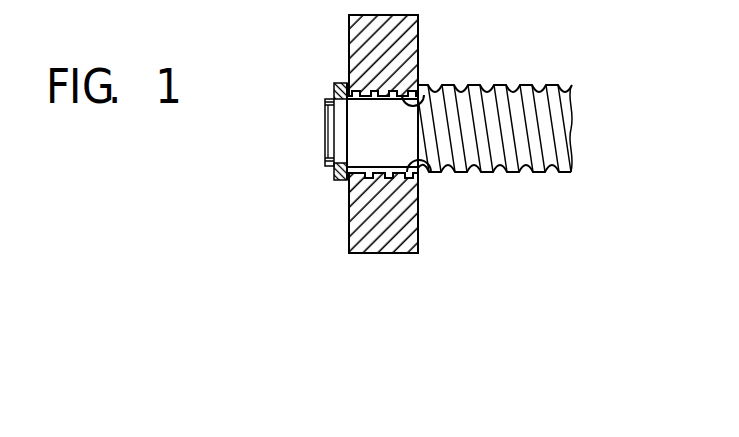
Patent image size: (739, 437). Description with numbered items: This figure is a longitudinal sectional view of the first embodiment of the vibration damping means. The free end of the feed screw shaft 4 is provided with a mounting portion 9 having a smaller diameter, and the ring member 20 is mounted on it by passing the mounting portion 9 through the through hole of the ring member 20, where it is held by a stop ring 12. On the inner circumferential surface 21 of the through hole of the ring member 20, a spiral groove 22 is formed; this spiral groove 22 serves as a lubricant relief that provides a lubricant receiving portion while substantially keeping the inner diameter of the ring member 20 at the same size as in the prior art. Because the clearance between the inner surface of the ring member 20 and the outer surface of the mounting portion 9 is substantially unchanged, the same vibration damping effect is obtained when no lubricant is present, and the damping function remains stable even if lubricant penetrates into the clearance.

The feed screw shaft 4 is at (568, 137).
The mounting portion 9 is at (420, 110).
The stop ring 12 is at (335, 182).
The ring member 20 is at (350, 24).
The inner circumferential surface 21 is at (410, 125).
The spiral groove 22 is at (419, 160).